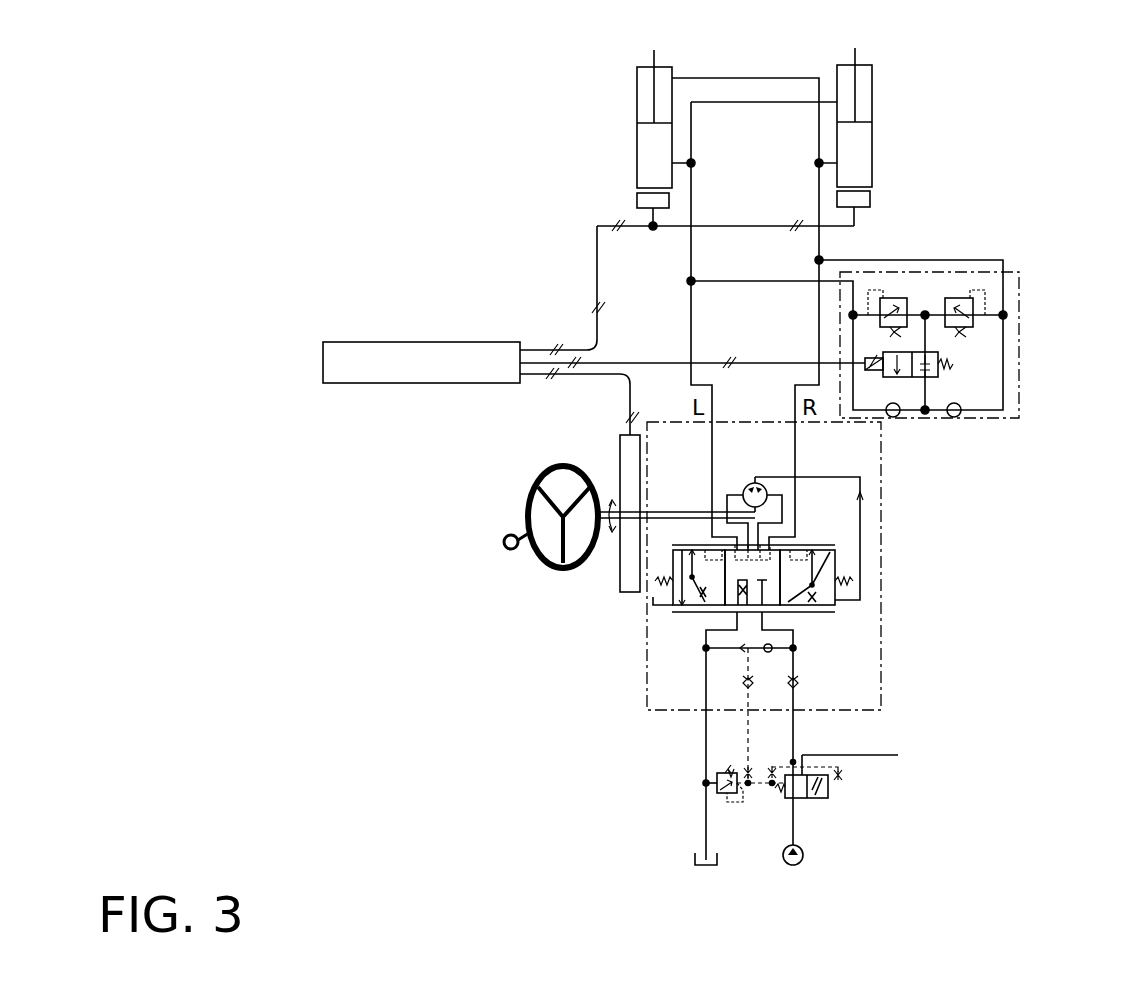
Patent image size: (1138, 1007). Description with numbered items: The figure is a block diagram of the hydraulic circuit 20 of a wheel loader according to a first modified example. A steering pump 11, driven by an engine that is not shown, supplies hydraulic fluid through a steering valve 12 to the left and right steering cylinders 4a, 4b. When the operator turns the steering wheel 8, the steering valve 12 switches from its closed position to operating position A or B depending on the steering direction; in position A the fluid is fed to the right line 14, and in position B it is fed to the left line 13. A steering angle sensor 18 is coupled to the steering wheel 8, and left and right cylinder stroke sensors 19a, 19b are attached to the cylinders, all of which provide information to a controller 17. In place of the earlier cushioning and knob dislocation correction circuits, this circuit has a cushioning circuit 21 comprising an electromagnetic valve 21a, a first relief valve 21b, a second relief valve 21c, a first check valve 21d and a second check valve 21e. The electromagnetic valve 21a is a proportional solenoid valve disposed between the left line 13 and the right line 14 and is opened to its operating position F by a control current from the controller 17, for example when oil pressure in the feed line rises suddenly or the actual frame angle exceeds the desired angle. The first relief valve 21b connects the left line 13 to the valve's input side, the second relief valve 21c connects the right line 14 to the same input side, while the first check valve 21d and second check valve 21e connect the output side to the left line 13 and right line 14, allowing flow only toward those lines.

The left steering cylinder 4a is at (637, 100).
The right steering cylinder 4b is at (872, 100).
The left cylinder stroke sensor 19a is at (637, 200).
The right cylinder stroke sensor 19b is at (870, 197).
The left line 13 is at (691, 262).
The right line 14 is at (819, 258).
The controller 17 is at (370, 341).
The steering wheel 8 is at (530, 490).
The steering angle sensor 18 is at (620, 585).
The steering valve 12 is at (857, 623).
The steering pump 11 is at (803, 852).
The hydraulic circuit 20 is at (1050, 126).
The cushioning circuit 21 is at (903, 353).
The electromagnetic valve 21a is at (938, 348).
The first relief valve 21b is at (898, 292).
The second relief valve 21c is at (955, 292).
The first check valve 21d is at (900, 417).
The second check valve 21e is at (950, 417).